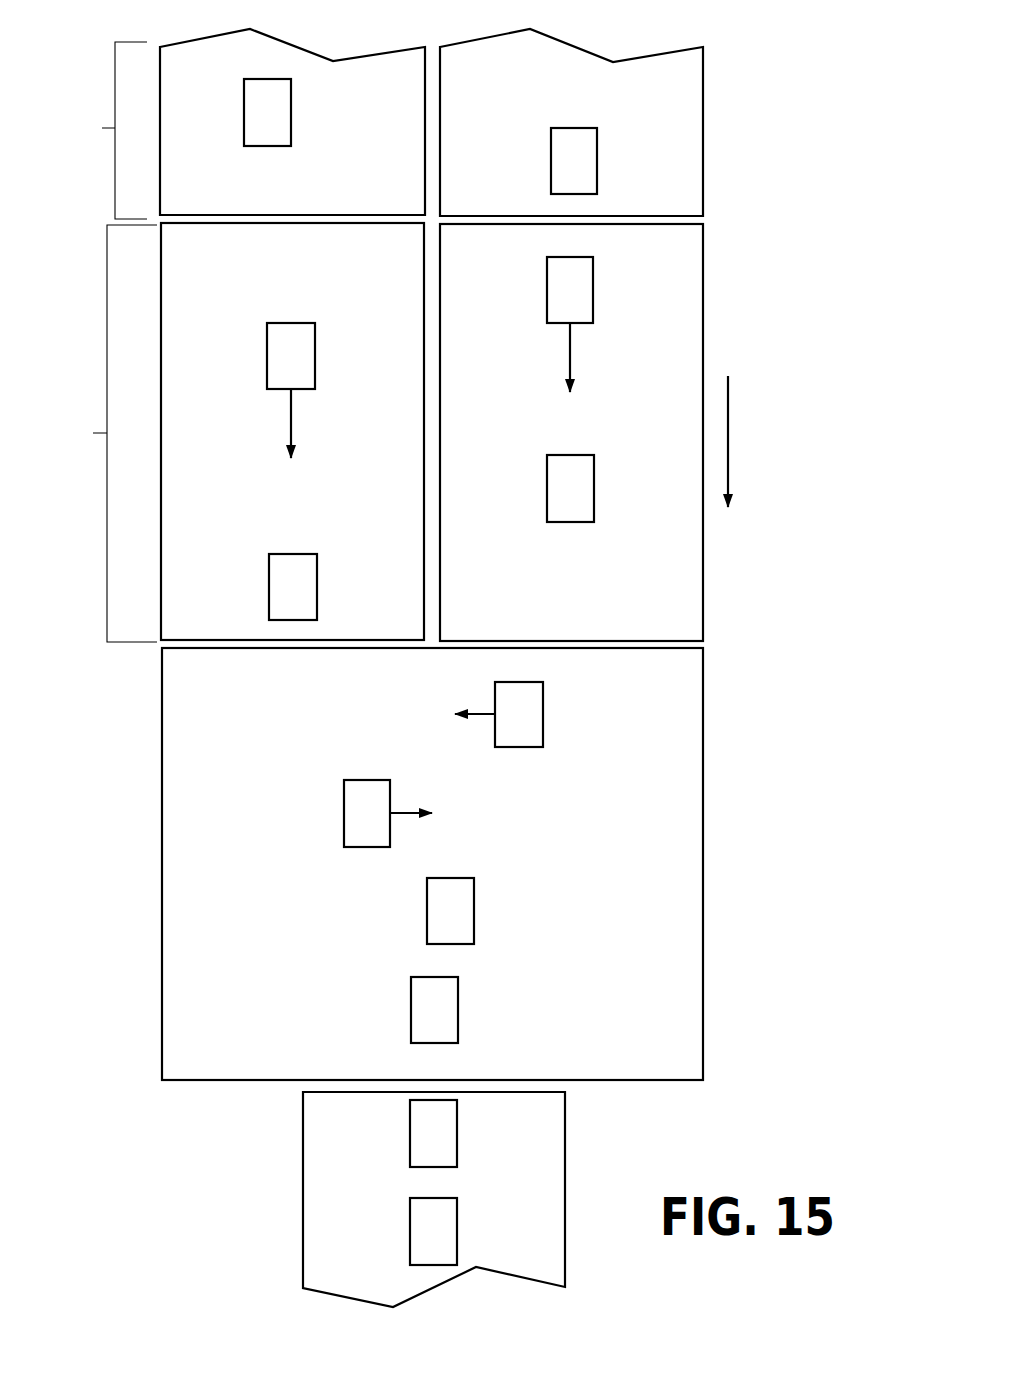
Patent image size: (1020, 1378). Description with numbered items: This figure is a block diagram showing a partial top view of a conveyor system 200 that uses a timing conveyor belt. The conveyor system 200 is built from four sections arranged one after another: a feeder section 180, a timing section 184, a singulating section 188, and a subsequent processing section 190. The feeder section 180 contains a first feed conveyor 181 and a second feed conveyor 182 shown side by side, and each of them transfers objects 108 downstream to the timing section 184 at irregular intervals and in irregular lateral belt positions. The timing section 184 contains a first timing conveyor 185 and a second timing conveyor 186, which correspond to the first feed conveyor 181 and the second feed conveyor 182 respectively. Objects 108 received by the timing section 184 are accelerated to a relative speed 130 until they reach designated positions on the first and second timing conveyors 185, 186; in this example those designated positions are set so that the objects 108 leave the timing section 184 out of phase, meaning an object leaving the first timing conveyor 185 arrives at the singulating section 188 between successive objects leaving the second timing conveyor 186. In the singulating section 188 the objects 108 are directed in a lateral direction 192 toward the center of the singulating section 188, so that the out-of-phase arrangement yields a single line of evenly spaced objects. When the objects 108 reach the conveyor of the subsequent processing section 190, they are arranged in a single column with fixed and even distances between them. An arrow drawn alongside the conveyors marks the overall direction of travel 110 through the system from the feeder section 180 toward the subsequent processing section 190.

The conveyor system 200 is at (747, 53).
The feeder section 180 is at (423, 110).
The first feed conveyor 181 is at (345, 95).
The second feed conveyor 182 is at (659, 83).
The objects 108 is at (577, 162).
The timing section 184 is at (417, 427).
The first timing conveyor 185 is at (183, 277).
The second timing conveyor 186 is at (671, 255).
The relative speed 130 is at (295, 417).
The web travel direction 110 is at (730, 442).
The singulating section 188 is at (188, 675).
The lateral direction 192 is at (480, 710).
The subsequent processing section 190 is at (338, 1103).